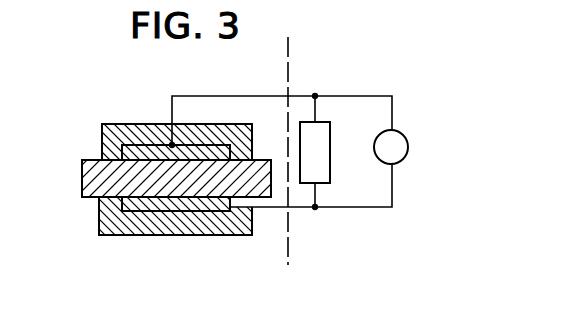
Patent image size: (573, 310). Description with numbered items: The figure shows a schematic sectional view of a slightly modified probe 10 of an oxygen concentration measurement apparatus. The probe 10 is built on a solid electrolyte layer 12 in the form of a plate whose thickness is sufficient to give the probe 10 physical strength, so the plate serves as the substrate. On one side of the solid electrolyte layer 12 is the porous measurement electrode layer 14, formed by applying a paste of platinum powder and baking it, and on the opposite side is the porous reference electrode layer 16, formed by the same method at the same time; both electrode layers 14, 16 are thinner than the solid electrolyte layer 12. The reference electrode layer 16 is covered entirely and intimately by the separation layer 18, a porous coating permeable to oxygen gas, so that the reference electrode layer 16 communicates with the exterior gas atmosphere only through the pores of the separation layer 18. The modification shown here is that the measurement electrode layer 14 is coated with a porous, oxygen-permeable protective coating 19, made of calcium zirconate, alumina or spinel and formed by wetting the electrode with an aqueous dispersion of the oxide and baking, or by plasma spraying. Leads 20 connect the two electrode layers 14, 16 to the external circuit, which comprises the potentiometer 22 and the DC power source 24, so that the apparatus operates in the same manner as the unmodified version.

The probe 10 is at (167, 184).
The solid electrolyte layer 12 is at (157, 179).
The measurement electrode layer 14 is at (144, 145).
The reference electrode layer 16 is at (178, 206).
The separation layer 18 is at (127, 223).
The protective coating 19 is at (118, 133).
The leads 20 is at (262, 96).
The potentiometer 22 is at (408, 148).
The DC power source 24 is at (333, 151).